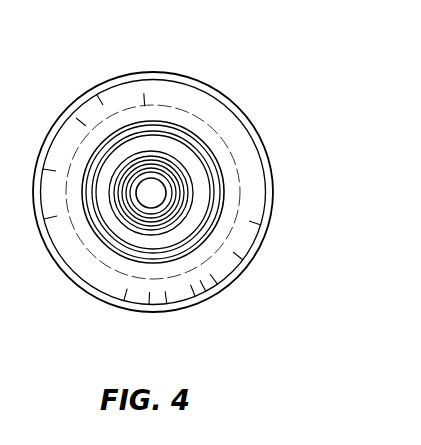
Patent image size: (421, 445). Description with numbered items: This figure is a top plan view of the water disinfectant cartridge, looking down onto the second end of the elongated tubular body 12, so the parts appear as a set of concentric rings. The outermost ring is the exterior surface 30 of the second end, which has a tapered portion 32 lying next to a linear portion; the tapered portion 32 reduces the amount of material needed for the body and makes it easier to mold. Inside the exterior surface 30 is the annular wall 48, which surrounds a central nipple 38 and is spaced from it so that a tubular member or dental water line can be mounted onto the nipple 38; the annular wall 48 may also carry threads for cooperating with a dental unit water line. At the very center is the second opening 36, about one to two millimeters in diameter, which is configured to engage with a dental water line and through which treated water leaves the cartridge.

The elongated tubular body 12 is at (258, 113).
The exterior surface 30 is at (275, 200).
The tapered portion 32 is at (222, 175).
The second opening 36 is at (160, 183).
The nipple 38 is at (128, 215).
The annular wall 48 is at (203, 240).